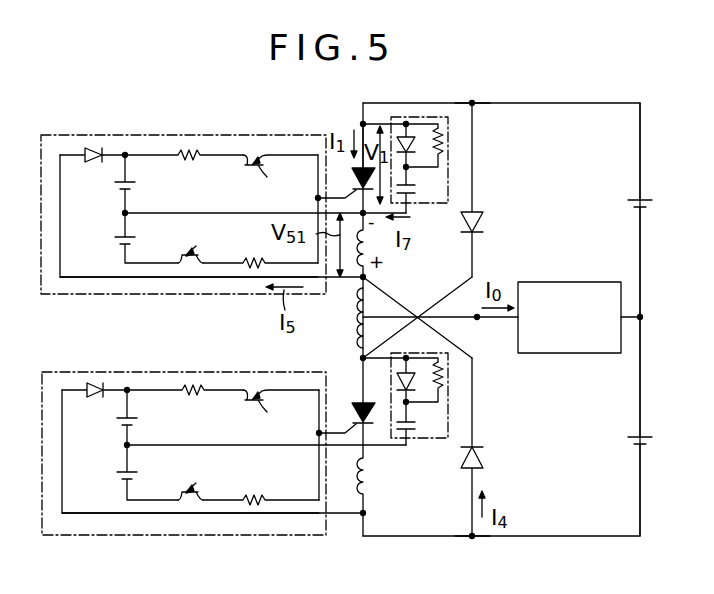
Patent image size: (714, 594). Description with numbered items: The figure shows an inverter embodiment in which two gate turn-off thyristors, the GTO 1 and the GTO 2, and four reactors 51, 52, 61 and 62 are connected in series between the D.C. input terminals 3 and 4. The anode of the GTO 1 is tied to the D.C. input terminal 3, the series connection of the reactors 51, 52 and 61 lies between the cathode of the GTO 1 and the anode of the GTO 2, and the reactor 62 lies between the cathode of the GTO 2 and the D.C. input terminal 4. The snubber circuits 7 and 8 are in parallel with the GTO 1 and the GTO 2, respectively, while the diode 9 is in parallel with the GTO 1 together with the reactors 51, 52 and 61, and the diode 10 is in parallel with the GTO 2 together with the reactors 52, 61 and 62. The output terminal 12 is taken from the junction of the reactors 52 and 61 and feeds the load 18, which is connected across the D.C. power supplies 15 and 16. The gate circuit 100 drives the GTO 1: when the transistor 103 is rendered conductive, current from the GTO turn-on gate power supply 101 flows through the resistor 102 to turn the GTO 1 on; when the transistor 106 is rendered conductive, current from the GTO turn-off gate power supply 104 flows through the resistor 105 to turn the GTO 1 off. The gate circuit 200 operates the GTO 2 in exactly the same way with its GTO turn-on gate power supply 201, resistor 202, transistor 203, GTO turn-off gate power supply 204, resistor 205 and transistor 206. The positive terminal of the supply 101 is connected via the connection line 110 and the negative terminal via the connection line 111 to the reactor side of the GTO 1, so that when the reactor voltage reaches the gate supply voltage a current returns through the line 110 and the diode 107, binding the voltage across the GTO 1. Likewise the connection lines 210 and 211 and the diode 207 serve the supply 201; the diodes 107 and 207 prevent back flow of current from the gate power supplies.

The GTO 1 is at (352, 176).
The GTO 2 is at (352, 403).
The D.C. input terminal 3 is at (472, 103).
The D.C. input terminal 4 is at (474, 539).
The snubber circuit 7 is at (448, 180).
The snubber circuit 8 is at (410, 440).
The diode 9 is at (484, 224).
The diode 10 is at (485, 460).
The output terminal 12 is at (477, 320).
The D.C. power supply 15 is at (627, 203).
The D.C. power supply 16 is at (627, 440).
The load 18 is at (563, 282).
The reactor 51 is at (372, 246).
The reactor 52 is at (368, 308).
The reactor 61 is at (360, 340).
The reactor 62 is at (372, 482).
The gate circuit 100 is at (156, 135).
The GTO turn-on gate power supply 101 is at (120, 186).
The resistor 102 is at (198, 150).
The transistor 103 is at (266, 174).
The GTO turn-off gate power supply 104 is at (130, 240).
The resistor 105 is at (246, 268).
The transistor 106 is at (196, 248).
The diode 107 is at (97, 148).
The connection line 110 is at (81, 277).
The connection line 111 is at (212, 213).
The gate circuit 200 is at (73, 372).
The GTO turn-on gate power supply 201 is at (132, 420).
The resistor 202 is at (192, 380).
The transistor 203 is at (266, 404).
The GTO turn-off gate power supply 204 is at (132, 472).
The resistor 205 is at (256, 505).
The transistor 206 is at (196, 484).
The diode 207 is at (94, 406).
The connection line 210 is at (80, 513).
The connection line 211 is at (212, 445).